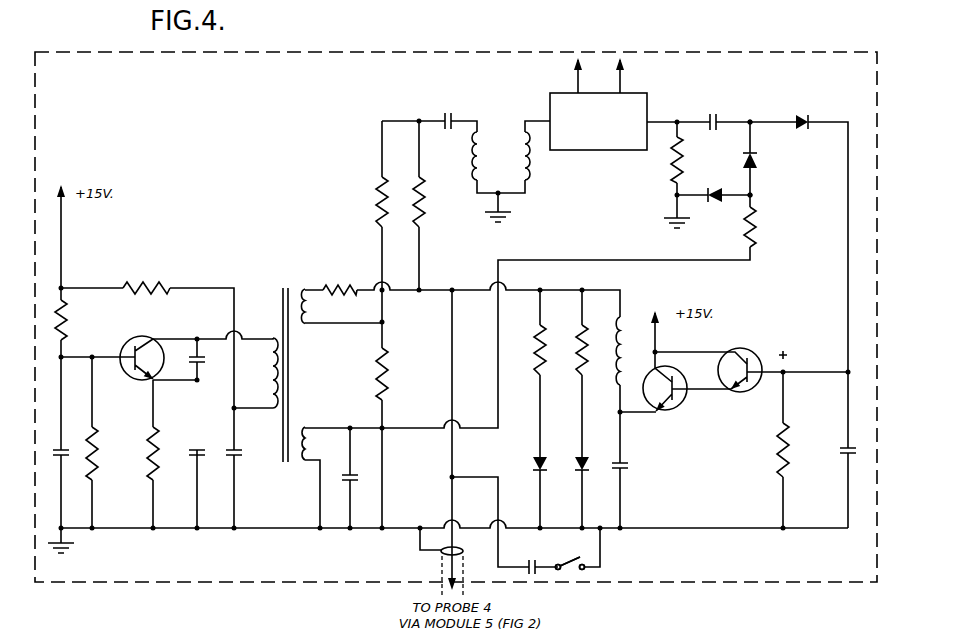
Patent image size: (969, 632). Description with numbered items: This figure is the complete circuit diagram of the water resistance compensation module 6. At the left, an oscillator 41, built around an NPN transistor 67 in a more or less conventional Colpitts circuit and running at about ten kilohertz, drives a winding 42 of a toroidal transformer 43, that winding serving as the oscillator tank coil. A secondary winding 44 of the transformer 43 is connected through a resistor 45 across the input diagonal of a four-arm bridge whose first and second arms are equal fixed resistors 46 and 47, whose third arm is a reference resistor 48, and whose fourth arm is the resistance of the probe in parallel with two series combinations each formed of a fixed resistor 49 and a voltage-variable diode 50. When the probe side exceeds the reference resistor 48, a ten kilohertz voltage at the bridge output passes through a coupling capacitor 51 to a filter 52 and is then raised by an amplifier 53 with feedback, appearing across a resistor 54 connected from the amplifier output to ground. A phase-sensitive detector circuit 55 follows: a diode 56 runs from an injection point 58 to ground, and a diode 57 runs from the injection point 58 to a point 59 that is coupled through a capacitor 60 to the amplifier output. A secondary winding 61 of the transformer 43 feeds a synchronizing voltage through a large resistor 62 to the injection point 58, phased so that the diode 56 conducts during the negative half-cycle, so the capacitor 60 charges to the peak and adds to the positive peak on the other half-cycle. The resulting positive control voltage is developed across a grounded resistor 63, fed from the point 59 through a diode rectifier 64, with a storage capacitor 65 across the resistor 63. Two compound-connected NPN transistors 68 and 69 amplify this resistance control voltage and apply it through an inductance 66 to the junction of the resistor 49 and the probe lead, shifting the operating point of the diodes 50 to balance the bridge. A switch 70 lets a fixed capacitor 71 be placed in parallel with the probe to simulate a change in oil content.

The water resistance compensation module 6 is at (770, 45).
The oscillator 41 is at (117, 331).
The winding 42 is at (272, 372).
The toroidal transformer 43 is at (285, 287).
The secondary winding 44 is at (309, 301).
The resistor 45 is at (338, 284).
The fixed resistor 46 is at (425, 216).
The fixed resistor 47 is at (377, 203).
The reference resistor 48 is at (389, 379).
The fixed resistor 49 is at (581, 337).
The diode 50 is at (580, 461).
The coupling capacitor 51 is at (447, 112).
The filter 52 is at (492, 171).
The amplifier 53 is at (601, 151).
The resistor 54 is at (672, 165).
The phase-sensitive detector circuit 55 is at (708, 167).
The diode 56 is at (714, 203).
The diode 57 is at (759, 161).
The injection point 58 is at (755, 195).
The point 59 is at (751, 121).
The capacitor 60 is at (714, 112).
The secondary winding 61 is at (310, 447).
The large resistor 62 is at (758, 233).
The resistor 63 is at (776, 451).
The diode rectifier 64 is at (803, 114).
The storage capacitor 65 is at (842, 452).
The inductance 66 is at (615, 372).
The NPN transistor 67 is at (147, 337).
The transistor 68 is at (750, 351).
The transistor 69 is at (667, 412).
The switch 70 is at (578, 561).
The fixed capacitor 71 is at (538, 552).